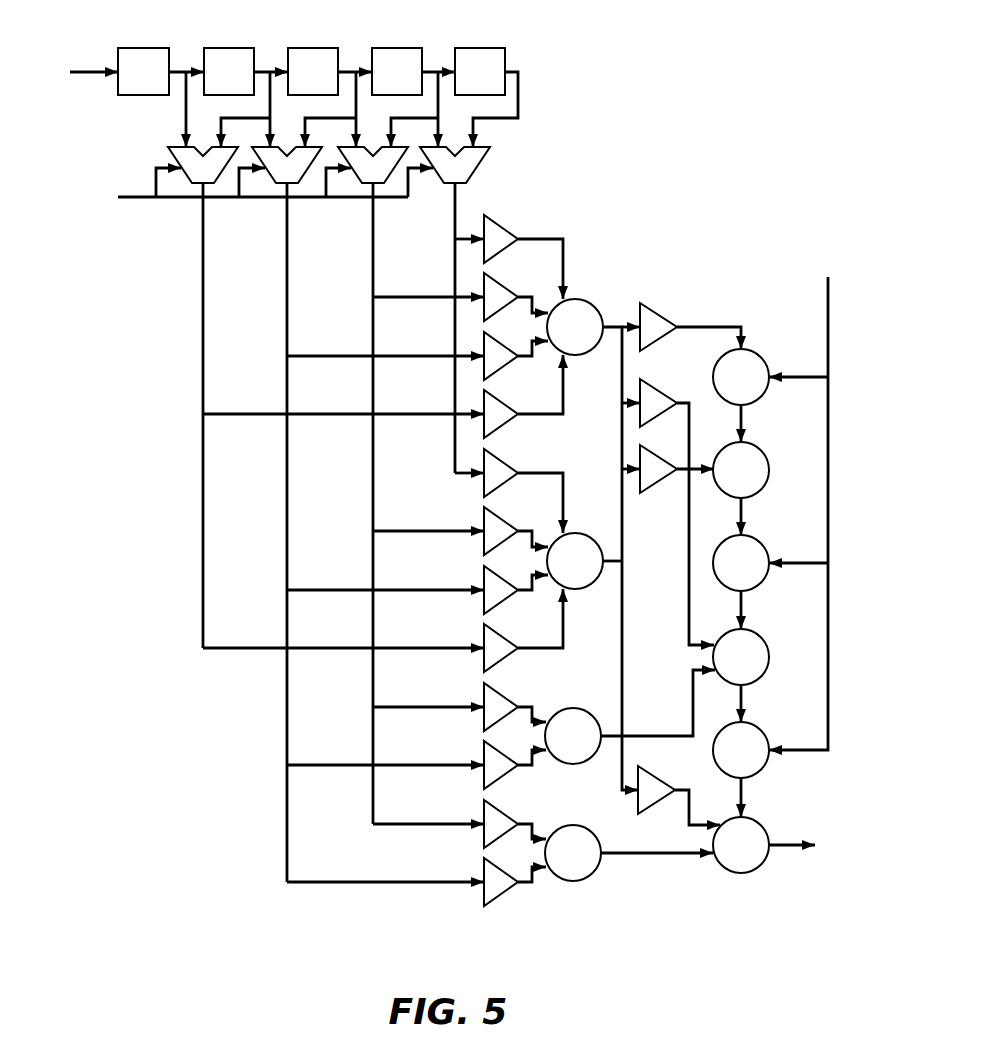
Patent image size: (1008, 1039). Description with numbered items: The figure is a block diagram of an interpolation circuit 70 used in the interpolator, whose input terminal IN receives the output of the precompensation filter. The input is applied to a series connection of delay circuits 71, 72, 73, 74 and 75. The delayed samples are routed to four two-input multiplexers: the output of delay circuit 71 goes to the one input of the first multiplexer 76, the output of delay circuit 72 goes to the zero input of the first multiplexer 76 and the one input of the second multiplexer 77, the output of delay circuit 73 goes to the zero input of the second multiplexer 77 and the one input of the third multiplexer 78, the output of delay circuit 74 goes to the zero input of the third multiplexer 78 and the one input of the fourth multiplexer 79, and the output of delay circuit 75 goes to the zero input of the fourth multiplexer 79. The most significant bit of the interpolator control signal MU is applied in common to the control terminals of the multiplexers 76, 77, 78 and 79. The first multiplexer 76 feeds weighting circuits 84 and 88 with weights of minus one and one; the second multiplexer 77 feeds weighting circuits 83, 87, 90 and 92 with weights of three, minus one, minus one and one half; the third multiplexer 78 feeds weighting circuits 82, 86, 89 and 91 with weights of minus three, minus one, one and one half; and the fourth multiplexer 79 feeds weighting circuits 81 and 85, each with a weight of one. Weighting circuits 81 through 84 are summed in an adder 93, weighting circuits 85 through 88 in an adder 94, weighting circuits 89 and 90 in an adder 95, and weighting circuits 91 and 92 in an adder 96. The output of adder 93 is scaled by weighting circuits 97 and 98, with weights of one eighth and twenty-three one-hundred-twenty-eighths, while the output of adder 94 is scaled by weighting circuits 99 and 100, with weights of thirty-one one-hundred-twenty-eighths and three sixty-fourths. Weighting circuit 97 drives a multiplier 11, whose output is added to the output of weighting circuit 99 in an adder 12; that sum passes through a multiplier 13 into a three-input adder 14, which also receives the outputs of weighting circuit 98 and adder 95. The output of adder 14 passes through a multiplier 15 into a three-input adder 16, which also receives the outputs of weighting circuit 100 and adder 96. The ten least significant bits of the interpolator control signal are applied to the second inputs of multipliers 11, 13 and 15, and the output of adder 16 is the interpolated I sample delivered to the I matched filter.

The multiplier 11 is at (765, 357).
The adder 12 is at (765, 450).
The multiplier 13 is at (765, 543).
The adder 14 is at (765, 637).
The multiplier 15 is at (765, 730).
The adder 16 is at (765, 825).
The interpolation circuit 70 is at (453, 474).
The delay circuit 71 is at (144, 47).
The delay circuit 72 is at (230, 47).
The delay circuit 73 is at (314, 47).
The delay circuit 74 is at (398, 47).
The delay circuit 75 is at (481, 47).
The first multiplexer 76 is at (188, 179).
The second multiplexer 77 is at (272, 179).
The third multiplexer 78 is at (358, 179).
The fourth multiplexer 79 is at (438, 180).
The weighting circuit 81 is at (484, 250).
The weighting circuit 82 is at (484, 308).
The weighting circuit 83 is at (484, 367).
The weighting circuit 84 is at (484, 425).
The weighting circuit 85 is at (484, 484).
The weighting circuit 86 is at (484, 542).
The weighting circuit 87 is at (484, 601).
The weighting circuit 88 is at (484, 659).
The weighting circuit 89 is at (484, 718).
The weighting circuit 90 is at (484, 776).
The weighting circuit 91 is at (484, 835).
The weighting circuit 92 is at (484, 893).
The adder 93 is at (587, 301).
The adder 94 is at (587, 535).
The adder 95 is at (586, 710).
The adder 96 is at (586, 828).
The weighting circuit 97 is at (657, 343).
The weighting circuit 98 is at (639, 420).
The weighting circuit 99 is at (658, 486).
The weighting circuit 100 is at (666, 806).